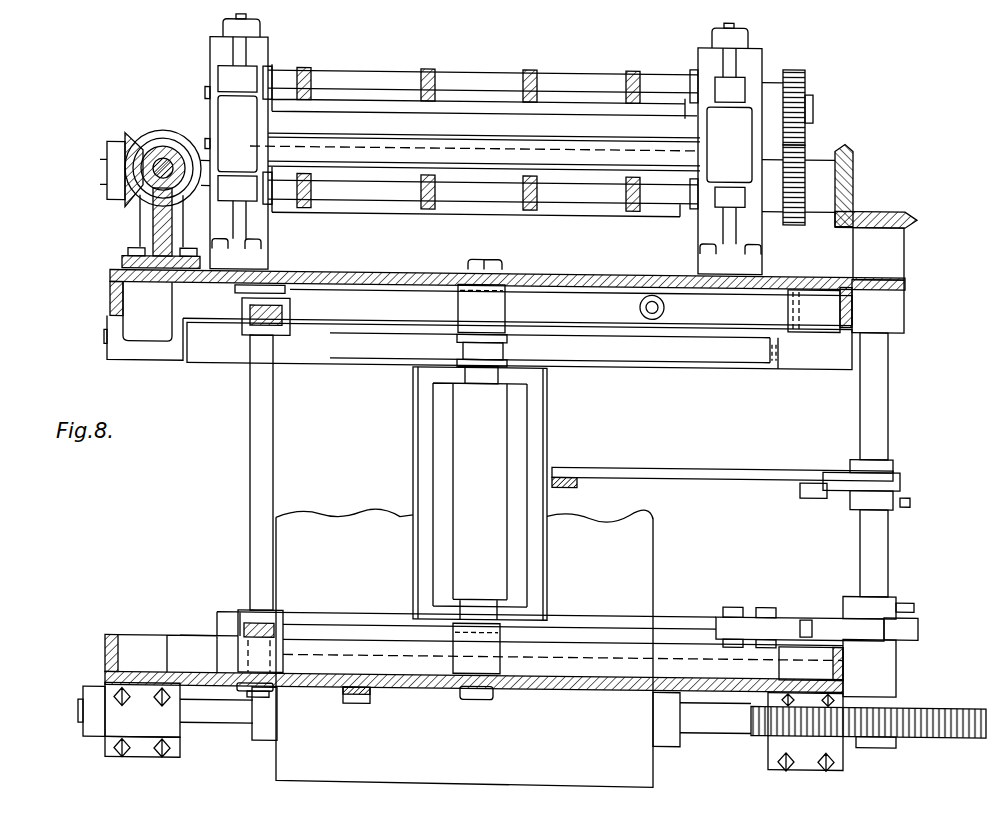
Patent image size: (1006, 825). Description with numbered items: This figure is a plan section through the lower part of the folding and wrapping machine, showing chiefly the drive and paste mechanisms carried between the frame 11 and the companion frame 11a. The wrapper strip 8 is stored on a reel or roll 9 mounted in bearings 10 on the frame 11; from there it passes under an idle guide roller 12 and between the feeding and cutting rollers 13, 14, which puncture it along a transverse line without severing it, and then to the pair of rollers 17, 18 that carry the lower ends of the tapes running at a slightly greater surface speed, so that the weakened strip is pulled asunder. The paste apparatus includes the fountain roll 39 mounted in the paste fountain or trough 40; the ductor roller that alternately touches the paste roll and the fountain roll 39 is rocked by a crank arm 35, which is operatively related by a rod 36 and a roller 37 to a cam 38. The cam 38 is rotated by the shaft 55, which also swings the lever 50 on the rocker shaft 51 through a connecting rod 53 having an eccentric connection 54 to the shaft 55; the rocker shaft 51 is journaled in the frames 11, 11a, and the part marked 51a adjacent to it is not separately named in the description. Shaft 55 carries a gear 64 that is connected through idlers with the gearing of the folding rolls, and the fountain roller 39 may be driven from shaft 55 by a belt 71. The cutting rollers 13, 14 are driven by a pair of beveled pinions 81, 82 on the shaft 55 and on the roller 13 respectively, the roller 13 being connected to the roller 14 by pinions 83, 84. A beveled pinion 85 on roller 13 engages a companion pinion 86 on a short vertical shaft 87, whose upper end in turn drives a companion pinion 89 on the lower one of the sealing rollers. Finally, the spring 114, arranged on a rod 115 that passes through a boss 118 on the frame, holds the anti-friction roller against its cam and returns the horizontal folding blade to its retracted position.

The wrapper strip 8 is at (305, 533).
The reel or roll 9 is at (238, 722).
The bearings 10 is at (85, 733).
The frame 11 is at (137, 649).
The frame 11a is at (110, 303).
The idle guide roller 12 is at (320, 353).
The feeding and cutting roller 13 is at (373, 203).
The feeding and cutting roller 14 is at (405, 72).
The roller 17 is at (330, 118).
The roller 18 is at (478, 145).
The crank arm 35 is at (575, 485).
The rod 36 is at (760, 466).
The roller 37 is at (812, 492).
The cam 38 is at (887, 484).
The fountain roll 39 is at (495, 437).
The paste fountain or trough 40 is at (420, 448).
The lever 50 is at (248, 628).
The rocker shaft 51 is at (265, 446).
The upper collar 51a is at (292, 309).
The connecting rod 53 is at (353, 625).
The eccentric connection 54 is at (821, 617).
The shaft 55 is at (880, 547).
The gear 64 is at (924, 706).
The belt 71 is at (688, 345).
The beveled pinion 81 is at (870, 208).
The beveled pinion 82 is at (853, 166).
The pinion 83 is at (802, 160).
The pinion 84 is at (808, 83).
The beveled pinion 85 is at (128, 141).
The companion pinion 86 is at (172, 142).
The short vertical shaft 87 is at (122, 206).
The companion pinion 89 is at (718, 727).
The spring 114 is at (640, 302).
The rod 115 is at (643, 325).
The boss 118 is at (676, 294).